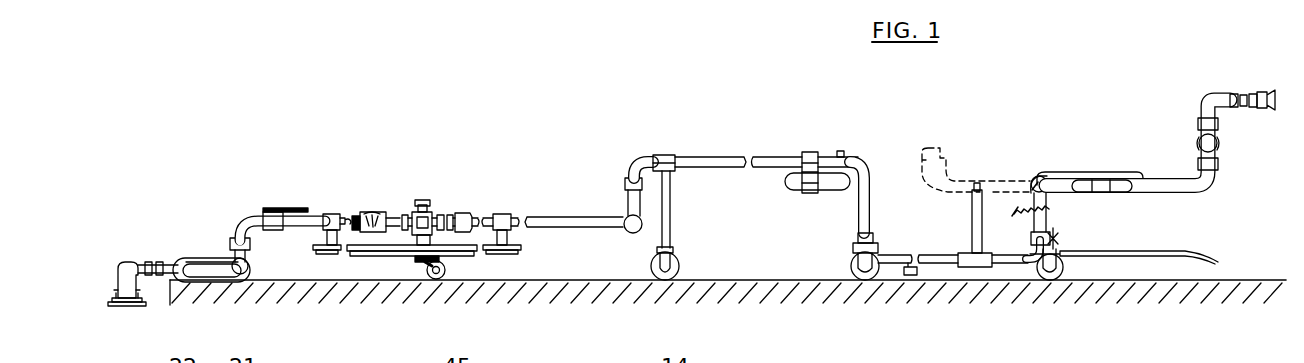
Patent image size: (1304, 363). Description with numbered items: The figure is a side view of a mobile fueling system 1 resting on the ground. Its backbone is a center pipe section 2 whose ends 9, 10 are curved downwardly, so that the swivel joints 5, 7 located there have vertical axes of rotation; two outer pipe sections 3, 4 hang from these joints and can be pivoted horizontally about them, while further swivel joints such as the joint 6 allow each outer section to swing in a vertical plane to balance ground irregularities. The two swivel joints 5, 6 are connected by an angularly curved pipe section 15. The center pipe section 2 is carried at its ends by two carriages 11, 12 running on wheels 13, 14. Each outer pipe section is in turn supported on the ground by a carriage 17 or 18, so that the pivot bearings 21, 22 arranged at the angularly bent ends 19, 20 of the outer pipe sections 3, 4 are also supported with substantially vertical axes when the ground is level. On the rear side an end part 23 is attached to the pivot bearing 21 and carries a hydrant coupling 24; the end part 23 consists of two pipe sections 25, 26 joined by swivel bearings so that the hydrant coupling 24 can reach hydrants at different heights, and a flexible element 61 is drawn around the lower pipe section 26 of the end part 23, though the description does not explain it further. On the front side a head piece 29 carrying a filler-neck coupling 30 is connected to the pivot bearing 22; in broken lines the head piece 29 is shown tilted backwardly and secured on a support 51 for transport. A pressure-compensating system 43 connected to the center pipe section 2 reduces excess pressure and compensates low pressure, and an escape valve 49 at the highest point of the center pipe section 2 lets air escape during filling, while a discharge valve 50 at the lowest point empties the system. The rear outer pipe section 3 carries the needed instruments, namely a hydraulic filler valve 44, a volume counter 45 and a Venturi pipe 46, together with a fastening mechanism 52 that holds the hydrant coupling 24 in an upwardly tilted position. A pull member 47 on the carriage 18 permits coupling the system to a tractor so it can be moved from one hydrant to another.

The fueling system 1 is at (755, 147).
The center pipe section 2 is at (703, 157).
The outer pipe section 3 is at (547, 216).
The outer pipe section 4 is at (1005, 264).
The swivel joint 5 is at (632, 170).
The swivel joint 6 is at (632, 233).
The swivel joint 7 is at (858, 262).
The end of the center pipe section 9 is at (652, 155).
The end of the center pipe section 10 is at (864, 163).
The carriage 11 is at (666, 193).
The carriage 12 is at (851, 262).
The wheel 13 is at (670, 272).
The wheel 14 is at (872, 277).
The angularly curved pipe section 15 is at (626, 214).
The carriage 17 is at (397, 257).
The carriage 18 is at (1046, 262).
The angularly bent end 19 is at (256, 213).
The angularly bent end 20 is at (1035, 250).
The pivot bearing 21 is at (232, 238).
The pivot bearing 22 is at (1052, 240).
The end part 23 is at (156, 287).
The hydrant coupling 24 is at (122, 260).
The pipe section 25 is at (240, 262).
The pipe section 26 is at (210, 272).
The head piece 29 is at (1098, 165).
The filler-neck coupling 30 is at (1259, 104).
The pressure-compensating system 43 is at (833, 180).
The hydraulic filler valve 44 is at (368, 211).
The volume counter 45 is at (419, 203).
The Venturi pipe 46 is at (463, 214).
The pull member 47 is at (1160, 258).
The escape valve 49 is at (840, 151).
The discharge valve 50 is at (909, 276).
The support 51 is at (977, 237).
The fastening mechanism 52 is at (300, 208).
The flexible hose 61 is at (193, 256).